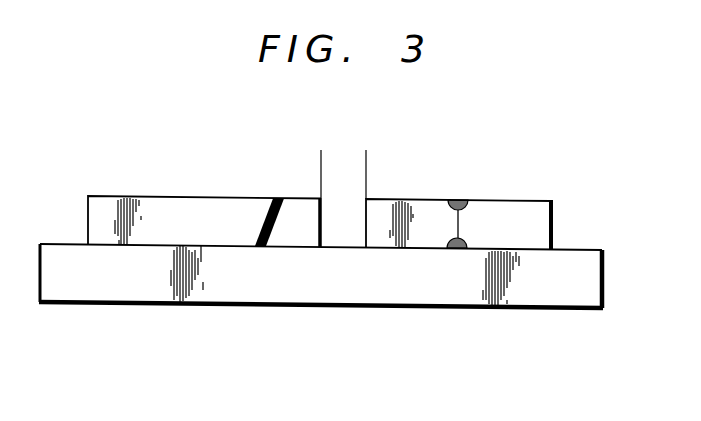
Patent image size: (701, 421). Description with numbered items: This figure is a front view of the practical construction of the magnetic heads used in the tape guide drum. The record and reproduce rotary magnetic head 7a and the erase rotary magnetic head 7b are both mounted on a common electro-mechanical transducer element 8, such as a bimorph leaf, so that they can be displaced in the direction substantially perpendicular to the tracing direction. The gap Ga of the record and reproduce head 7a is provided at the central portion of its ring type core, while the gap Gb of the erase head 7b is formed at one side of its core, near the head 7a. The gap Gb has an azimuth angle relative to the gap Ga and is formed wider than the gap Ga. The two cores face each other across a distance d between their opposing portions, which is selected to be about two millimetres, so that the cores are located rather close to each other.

The electro-mechanical transducer element 8 is at (458, 309).
The erase rotary magnetic head 7b is at (162, 206).
The record and reproduce rotary magnetic head 7a is at (512, 210).
The gap of the erase magnetic head Gb is at (255, 213).
The gap of the record and reproduce magnetic head Ga is at (457, 231).
The distance between the opposing portions of the cores d is at (298, 163).